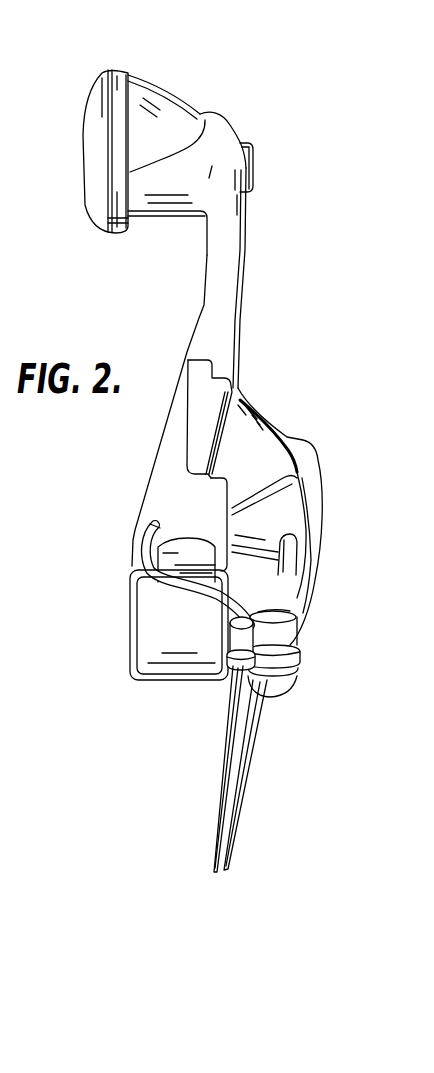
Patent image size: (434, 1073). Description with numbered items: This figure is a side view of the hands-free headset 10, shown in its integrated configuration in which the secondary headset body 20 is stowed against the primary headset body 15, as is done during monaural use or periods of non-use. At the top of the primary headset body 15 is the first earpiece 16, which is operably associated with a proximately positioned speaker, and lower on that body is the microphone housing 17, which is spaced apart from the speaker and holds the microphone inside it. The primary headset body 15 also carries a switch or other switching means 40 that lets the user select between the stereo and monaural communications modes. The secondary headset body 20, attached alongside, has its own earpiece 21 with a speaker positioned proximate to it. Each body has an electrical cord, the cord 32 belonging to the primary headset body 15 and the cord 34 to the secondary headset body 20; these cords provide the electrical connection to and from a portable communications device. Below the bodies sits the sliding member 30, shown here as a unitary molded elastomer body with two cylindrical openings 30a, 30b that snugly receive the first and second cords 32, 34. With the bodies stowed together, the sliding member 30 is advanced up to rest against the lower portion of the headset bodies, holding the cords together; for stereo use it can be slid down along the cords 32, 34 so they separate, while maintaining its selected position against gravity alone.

The hands-free headset 10 is at (124, 337).
The primary headset body 15 is at (202, 323).
The first earpiece 16 is at (103, 68).
The microphone housing 17 is at (130, 615).
The secondary headset body 20 is at (313, 553).
The earpiece 21 is at (210, 430).
The sliding member 30 is at (288, 652).
The cylindrical opening 30a is at (230, 660).
The cylindrical opening 30b is at (280, 688).
The electrical cord 32 is at (233, 712).
The electrical cord 34 is at (243, 767).
The switching means 40 is at (253, 170).